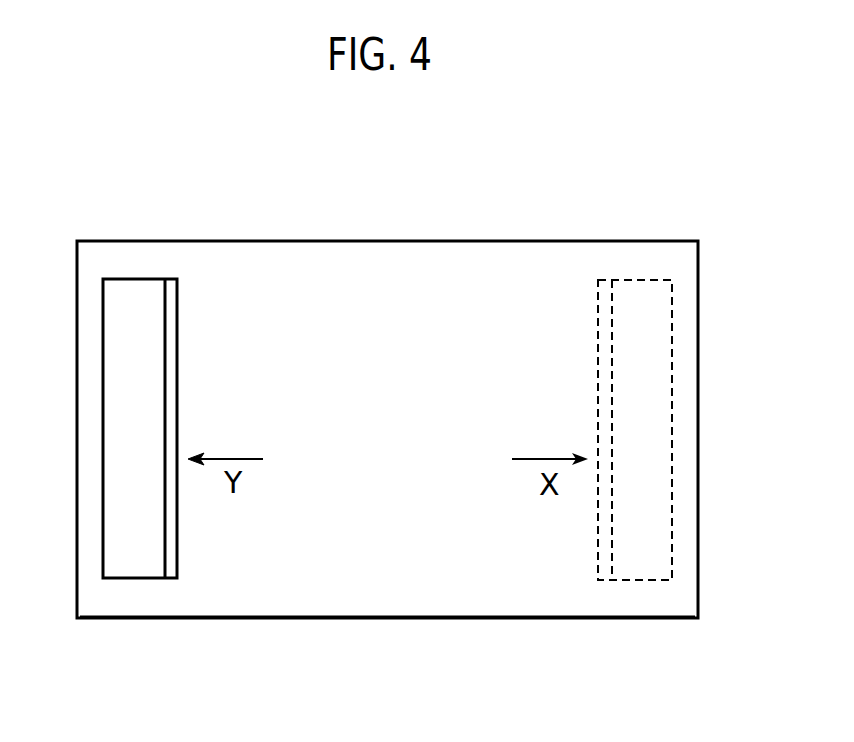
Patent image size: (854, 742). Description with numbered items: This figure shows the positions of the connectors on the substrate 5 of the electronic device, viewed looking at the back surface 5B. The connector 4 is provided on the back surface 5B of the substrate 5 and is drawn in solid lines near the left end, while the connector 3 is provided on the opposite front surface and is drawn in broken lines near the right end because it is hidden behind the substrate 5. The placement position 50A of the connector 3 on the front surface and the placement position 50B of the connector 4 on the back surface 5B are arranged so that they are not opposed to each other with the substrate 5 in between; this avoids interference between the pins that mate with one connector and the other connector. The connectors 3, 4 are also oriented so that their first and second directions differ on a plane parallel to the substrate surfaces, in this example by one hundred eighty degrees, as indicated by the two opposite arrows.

The substrate 5 is at (482, 233).
The back surface 5B is at (135, 600).
The placement position 50B is at (135, 292).
The connector 4 is at (175, 328).
The placement position 50A is at (638, 293).
The connector 3 is at (605, 330).